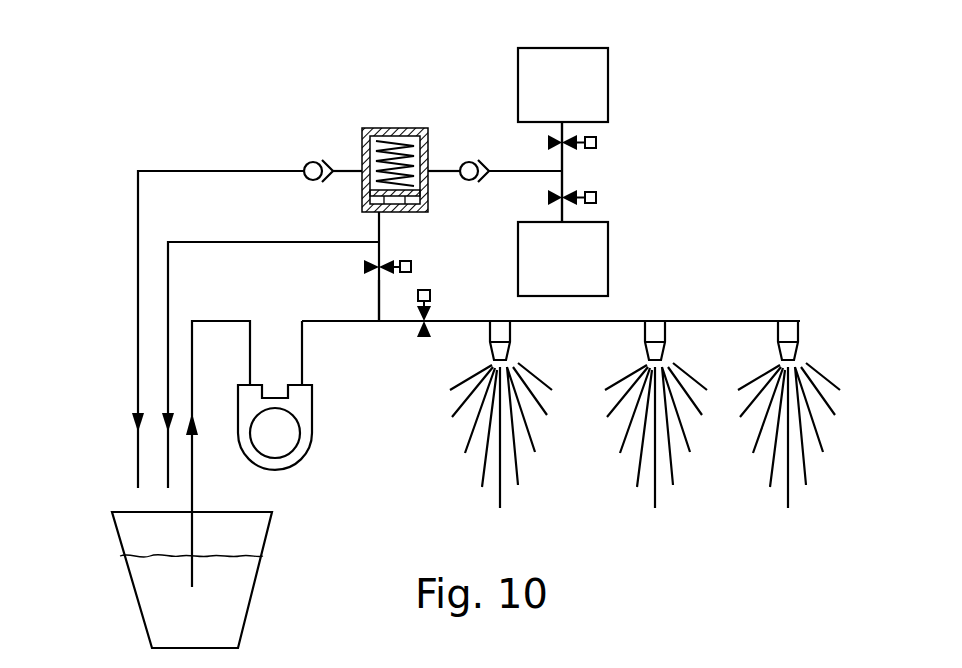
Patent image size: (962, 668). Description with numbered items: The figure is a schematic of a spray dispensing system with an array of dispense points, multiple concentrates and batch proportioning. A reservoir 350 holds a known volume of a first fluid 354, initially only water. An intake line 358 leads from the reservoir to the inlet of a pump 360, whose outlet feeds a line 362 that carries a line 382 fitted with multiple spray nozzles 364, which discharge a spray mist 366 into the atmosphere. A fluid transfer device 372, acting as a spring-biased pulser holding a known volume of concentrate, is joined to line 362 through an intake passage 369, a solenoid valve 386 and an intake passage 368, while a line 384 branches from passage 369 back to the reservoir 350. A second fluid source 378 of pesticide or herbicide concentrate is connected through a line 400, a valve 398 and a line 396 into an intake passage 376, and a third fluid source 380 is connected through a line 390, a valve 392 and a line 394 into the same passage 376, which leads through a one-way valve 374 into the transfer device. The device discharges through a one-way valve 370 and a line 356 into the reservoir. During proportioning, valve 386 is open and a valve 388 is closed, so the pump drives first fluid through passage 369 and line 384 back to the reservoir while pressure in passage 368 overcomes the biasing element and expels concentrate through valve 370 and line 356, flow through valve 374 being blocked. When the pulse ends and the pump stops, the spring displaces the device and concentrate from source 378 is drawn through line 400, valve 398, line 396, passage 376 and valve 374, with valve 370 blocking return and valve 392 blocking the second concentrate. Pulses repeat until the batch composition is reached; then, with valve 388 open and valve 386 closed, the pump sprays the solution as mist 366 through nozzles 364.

The reservoir 350 is at (118, 549).
The first fluid 354 is at (205, 607).
The line 356 is at (138, 328).
The intake line 358 is at (192, 497).
The pump 360 is at (310, 452).
The line 362 is at (330, 322).
The spray nozzles 364 is at (490, 331).
The spray mist 366 is at (518, 477).
The intake passage 368 is at (379, 232).
The intake passage 369 is at (379, 310).
The one-way valve 370 is at (313, 162).
The fluid transfer device 372 is at (358, 110).
The one-way valve 374 is at (461, 164).
The intake passage 376 is at (519, 168).
The second fluid source 378 is at (608, 52).
The third fluid source 380 is at (608, 268).
The line 382 is at (757, 320).
The line 384 is at (268, 242).
The valve 386 is at (412, 267).
The valve 388 is at (431, 295).
The line 390 is at (565, 208).
The valve 392 is at (565, 192).
The line 394 is at (565, 177).
The line 396 is at (566, 148).
The valve 398 is at (598, 140).
The line 400 is at (600, 123).